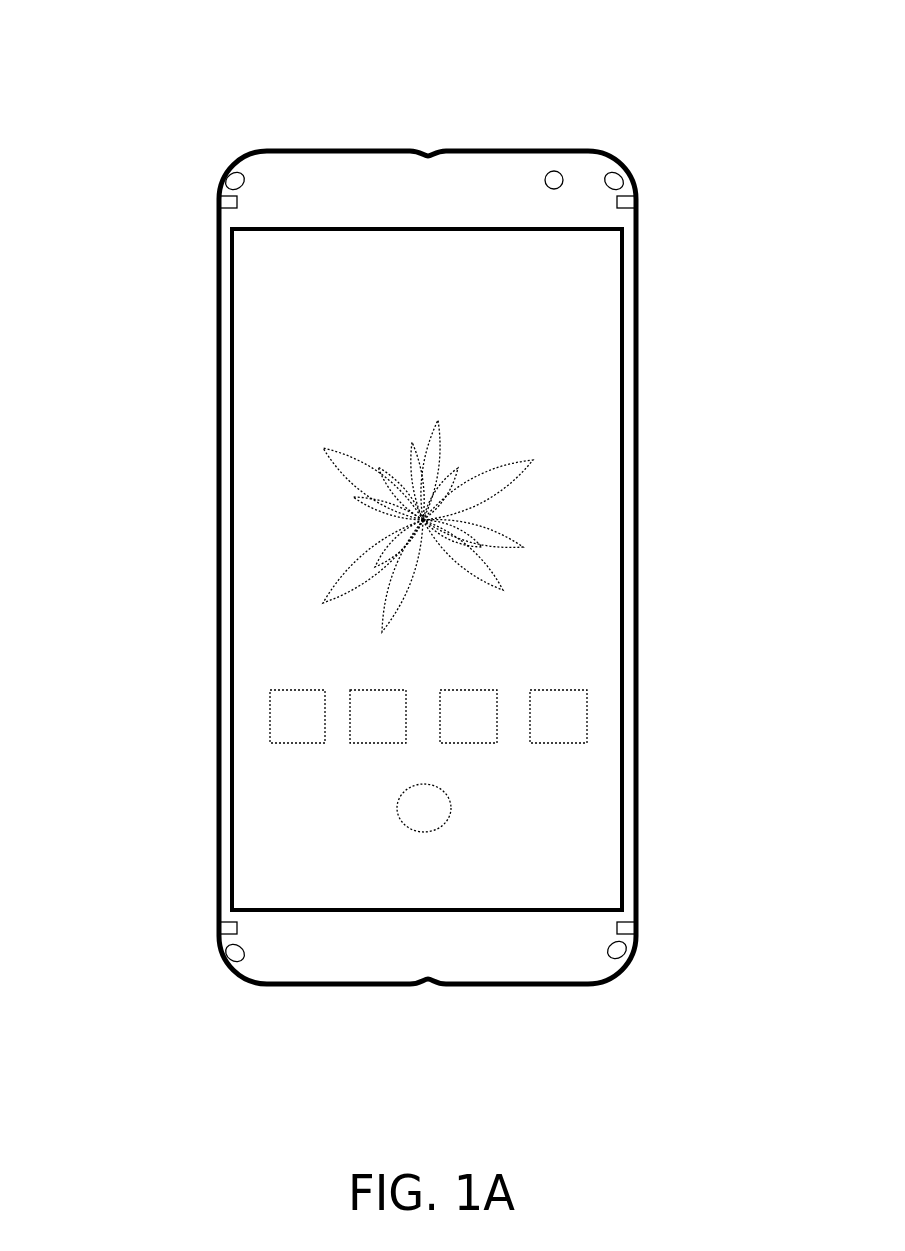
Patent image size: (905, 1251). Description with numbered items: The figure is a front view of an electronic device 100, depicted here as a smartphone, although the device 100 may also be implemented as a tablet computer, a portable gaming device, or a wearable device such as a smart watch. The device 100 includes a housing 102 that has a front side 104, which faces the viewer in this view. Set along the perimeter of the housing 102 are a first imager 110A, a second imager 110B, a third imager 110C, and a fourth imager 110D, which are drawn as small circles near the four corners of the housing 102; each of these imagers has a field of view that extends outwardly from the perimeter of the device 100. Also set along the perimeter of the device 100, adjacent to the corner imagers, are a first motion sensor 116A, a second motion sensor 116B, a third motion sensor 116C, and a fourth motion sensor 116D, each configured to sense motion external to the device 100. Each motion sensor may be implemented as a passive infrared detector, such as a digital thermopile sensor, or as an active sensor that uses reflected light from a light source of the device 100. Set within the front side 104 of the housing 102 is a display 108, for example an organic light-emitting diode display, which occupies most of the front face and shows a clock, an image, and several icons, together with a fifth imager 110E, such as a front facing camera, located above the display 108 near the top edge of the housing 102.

The electronic device 100 is at (152, 682).
The housing 102 is at (318, 150).
The front side 104 is at (602, 413).
The display 108 is at (326, 285).
The first imager 110A is at (232, 173).
The second imager 110B is at (231, 960).
The third imager 110C is at (622, 958).
The fourth imager 110D is at (620, 176).
The fifth imager 110E is at (555, 171).
The first motion sensor 116A is at (217, 200).
The second motion sensor 116B is at (217, 928).
The third motion sensor 116C is at (663, 937).
The fourth motion sensor 116D is at (638, 200).